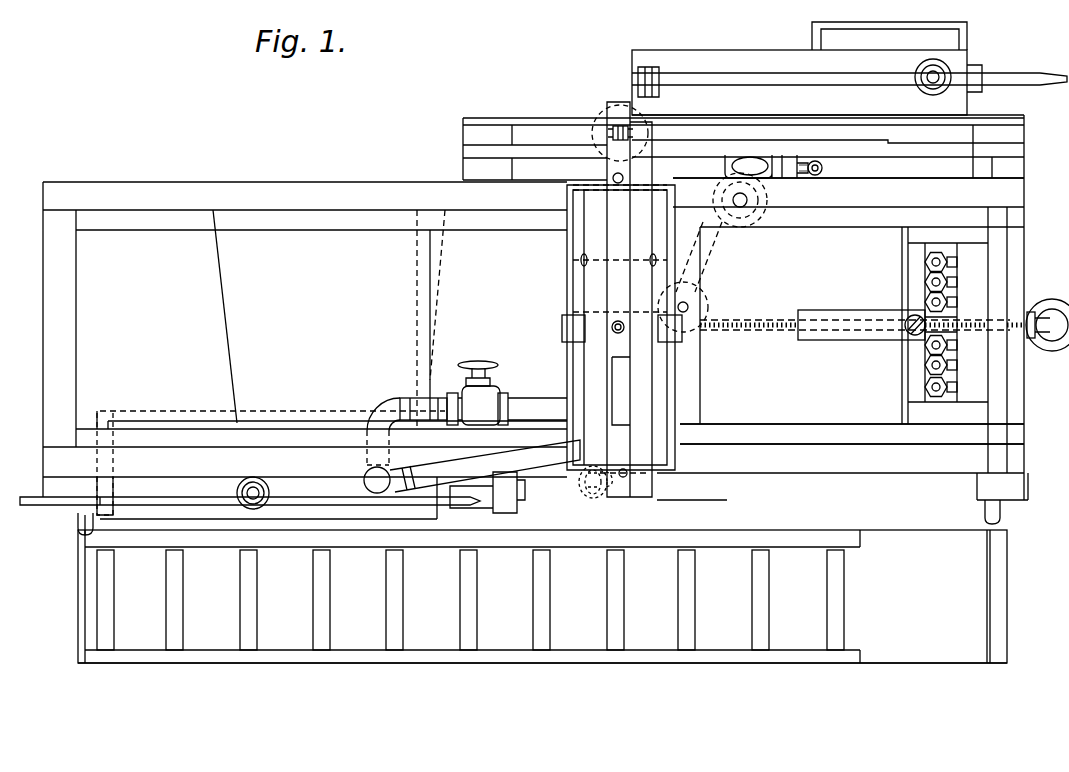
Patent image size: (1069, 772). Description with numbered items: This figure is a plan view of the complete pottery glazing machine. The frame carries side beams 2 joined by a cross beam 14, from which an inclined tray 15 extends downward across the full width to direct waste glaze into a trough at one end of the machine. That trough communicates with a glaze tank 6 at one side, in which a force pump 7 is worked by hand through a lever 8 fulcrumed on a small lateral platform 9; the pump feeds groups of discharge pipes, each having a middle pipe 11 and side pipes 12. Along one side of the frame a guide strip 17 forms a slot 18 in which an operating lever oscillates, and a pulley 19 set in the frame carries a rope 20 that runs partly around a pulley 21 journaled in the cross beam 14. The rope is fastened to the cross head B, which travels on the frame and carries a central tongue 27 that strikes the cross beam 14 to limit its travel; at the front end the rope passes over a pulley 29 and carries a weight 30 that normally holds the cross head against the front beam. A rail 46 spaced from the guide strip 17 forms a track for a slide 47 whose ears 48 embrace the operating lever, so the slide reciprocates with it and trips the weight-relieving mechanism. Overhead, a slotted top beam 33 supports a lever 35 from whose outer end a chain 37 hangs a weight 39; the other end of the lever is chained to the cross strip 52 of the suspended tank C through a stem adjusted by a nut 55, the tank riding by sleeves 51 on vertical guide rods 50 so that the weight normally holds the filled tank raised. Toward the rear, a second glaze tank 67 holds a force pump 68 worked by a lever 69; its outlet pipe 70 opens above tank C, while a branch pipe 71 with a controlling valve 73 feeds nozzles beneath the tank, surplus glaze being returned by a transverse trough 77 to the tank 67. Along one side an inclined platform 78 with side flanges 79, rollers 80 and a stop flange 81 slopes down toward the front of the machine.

The side beams 2 is at (313, 182).
The glaze tank 6 is at (812, 28).
The force pump 7 is at (950, 67).
The lever 8 is at (801, 84).
The platform 9 is at (686, 38).
The rail 46 is at (990, 112).
The guide strip 17 is at (1024, 152).
The slide 47 is at (730, 140).
The ears 48 is at (725, 167).
The slot 18 is at (876, 178).
The weight 39 is at (606, 120).
The chain 37 is at (607, 152).
The pulley 19 is at (757, 220).
The rope 20 is at (710, 228).
The pulley 21 is at (708, 305).
The side pipes 12 is at (925, 262).
The middle pipe 11 is at (925, 283).
The pulley 29 is at (1040, 302).
The weight 30 is at (1052, 352).
The cross head B is at (1010, 405).
The tongue 27 is at (862, 340).
The inclined tray 15 is at (892, 325).
The cross strip 52 is at (562, 318).
The nut 55 is at (616, 322).
The lever 35 is at (612, 370).
The top beam 33 is at (648, 358).
The cross beam 14 is at (700, 395).
The tank C is at (668, 433).
The valve 73 is at (480, 362).
The branch pipe 71 is at (400, 398).
The trough 77 is at (226, 334).
The glaze tank 67 is at (160, 411).
The force pump 68 is at (253, 478).
The outlet pipe 70 is at (366, 476).
The lever 69 is at (60, 512).
The guide rods 50 is at (600, 482).
The sleeves 51 is at (624, 480).
The inclined platform 78 is at (437, 625).
The side flanges 79 is at (585, 665).
The rollers 80 is at (242, 610).
The stop flange 81 is at (987, 650).